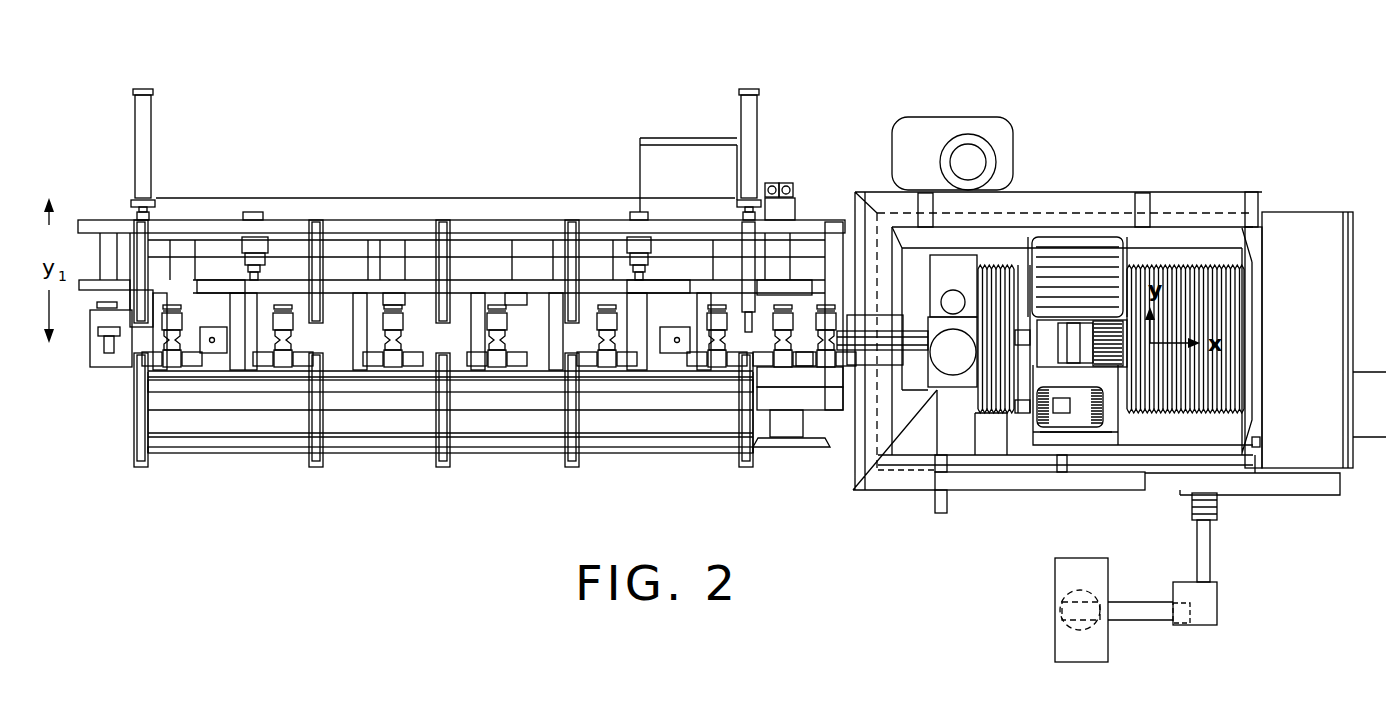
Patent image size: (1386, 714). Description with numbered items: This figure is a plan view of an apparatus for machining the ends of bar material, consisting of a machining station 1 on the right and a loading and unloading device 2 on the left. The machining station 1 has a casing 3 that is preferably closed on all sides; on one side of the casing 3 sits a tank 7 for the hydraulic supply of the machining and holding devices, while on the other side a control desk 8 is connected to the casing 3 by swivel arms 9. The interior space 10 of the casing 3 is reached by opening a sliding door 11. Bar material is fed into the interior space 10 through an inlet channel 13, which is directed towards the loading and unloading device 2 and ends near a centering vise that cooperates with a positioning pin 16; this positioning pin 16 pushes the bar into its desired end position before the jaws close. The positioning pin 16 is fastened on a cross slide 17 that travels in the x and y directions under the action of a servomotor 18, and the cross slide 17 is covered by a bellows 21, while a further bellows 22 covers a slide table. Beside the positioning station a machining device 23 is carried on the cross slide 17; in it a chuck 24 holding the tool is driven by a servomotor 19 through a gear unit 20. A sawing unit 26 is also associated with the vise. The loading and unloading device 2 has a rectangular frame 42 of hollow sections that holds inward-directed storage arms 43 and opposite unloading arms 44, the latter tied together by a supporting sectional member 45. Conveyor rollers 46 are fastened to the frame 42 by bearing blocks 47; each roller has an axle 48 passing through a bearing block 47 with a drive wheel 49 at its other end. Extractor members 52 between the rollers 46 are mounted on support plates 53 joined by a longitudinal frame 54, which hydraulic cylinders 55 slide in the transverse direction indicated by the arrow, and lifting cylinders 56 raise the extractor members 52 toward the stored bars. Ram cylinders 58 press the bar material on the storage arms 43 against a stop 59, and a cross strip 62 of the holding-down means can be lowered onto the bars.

The machining station 1 is at (1113, 114).
The loading and unloading device 2 is at (378, 143).
The casing 3 is at (1160, 183).
The tank 7 is at (1005, 147).
The control desk 8 is at (1097, 575).
The swivel arms 9 is at (1155, 608).
The interior space 10 is at (1217, 233).
The sliding door 11 is at (1003, 480).
The inlet channel 13 is at (873, 350).
The positioning pin 16 is at (1018, 328).
The cross slide 17 is at (1134, 243).
The servomotor 18 is at (1113, 352).
The servomotor 19 is at (1080, 395).
The gear unit 20 is at (1113, 417).
The bellows 21 is at (1057, 247).
The bellows 22 is at (1230, 290).
The machining device 23 is at (1050, 440).
The chuck 24 is at (1015, 413).
The sawing unit 26 is at (953, 398).
The rectangular frame 42 is at (227, 407).
The storage arms 43 is at (150, 232).
The unloading arms 44 is at (137, 427).
The supporting sectional member 45 is at (497, 383).
The conveyor rollers 46 is at (291, 340).
The bearing blocks 47 is at (403, 287).
The axle 48 is at (607, 367).
The drive wheel 49 is at (277, 293).
The extractor members 52 is at (227, 293).
The support plates 53 is at (237, 367).
The longitudinal frame 54 is at (493, 287).
The hydraulic cylinders 55 is at (265, 212).
The lifting cylinders 56 is at (202, 345).
The ram cylinders 58 is at (152, 135).
The stop 59 is at (558, 337).
The cross strip 62 is at (760, 253).